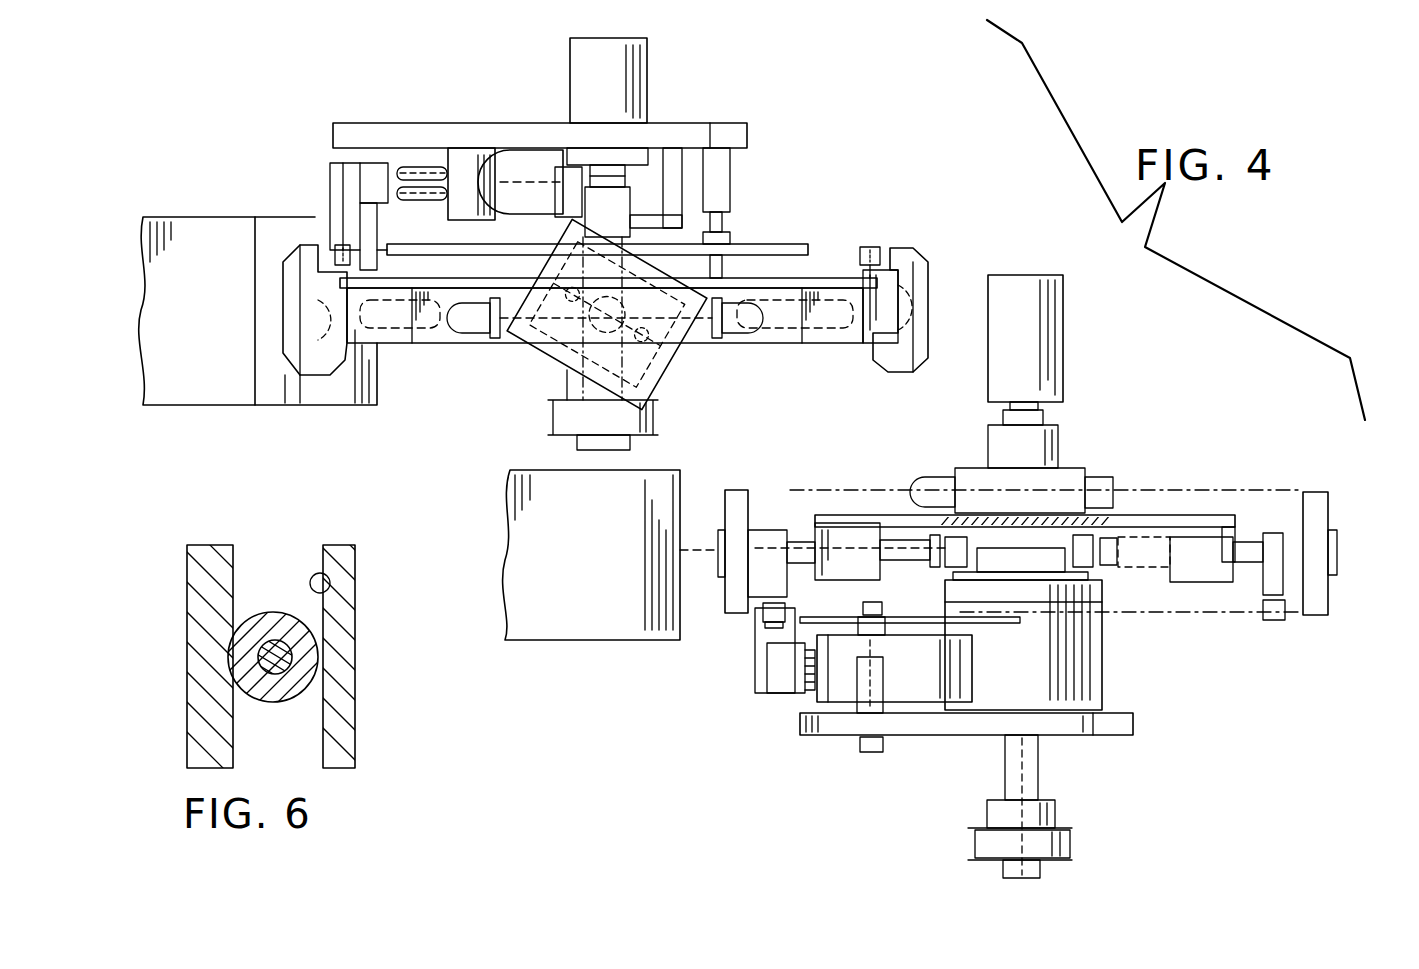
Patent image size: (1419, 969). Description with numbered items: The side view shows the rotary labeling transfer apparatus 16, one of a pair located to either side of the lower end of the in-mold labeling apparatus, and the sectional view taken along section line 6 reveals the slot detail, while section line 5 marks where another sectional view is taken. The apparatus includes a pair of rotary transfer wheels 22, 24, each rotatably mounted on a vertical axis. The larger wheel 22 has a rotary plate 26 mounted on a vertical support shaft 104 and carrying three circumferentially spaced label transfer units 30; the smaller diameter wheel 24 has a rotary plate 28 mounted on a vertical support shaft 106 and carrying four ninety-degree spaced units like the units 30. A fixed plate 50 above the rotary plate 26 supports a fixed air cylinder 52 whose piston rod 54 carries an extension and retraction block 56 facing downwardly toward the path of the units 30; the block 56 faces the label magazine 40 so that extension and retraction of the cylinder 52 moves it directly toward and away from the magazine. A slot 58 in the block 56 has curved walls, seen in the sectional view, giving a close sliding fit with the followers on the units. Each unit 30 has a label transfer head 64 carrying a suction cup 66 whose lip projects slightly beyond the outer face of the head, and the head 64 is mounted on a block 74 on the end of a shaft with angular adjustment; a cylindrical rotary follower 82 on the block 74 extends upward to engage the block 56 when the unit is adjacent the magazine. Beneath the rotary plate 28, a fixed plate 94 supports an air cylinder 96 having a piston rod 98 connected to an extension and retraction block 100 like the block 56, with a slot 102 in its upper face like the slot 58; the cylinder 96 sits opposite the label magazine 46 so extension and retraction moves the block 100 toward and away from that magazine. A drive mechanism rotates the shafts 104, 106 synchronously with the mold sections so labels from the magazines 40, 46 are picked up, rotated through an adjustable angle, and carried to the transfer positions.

In FIG. 4, the section line 5- 5 is at (530, 52).
In FIG. 4, the section line 6- 6 is at (318, 242).
In FIG. 4, the rotary labeling transfer apparatus 16 is at (885, 93).
In FIG. 4, the rotary transfer wheel 22 is at (790, 185).
In FIG. 4, the rotary transfer wheel 24 is at (1202, 652).
In FIG. 4, the rotary plate 26 is at (808, 278).
In FIG. 4, the rotary plate 28 is at (1150, 515).
In FIG. 4, the label transfer unit 30 is at (401, 360).
In FIG. 4, the label magazine 40 is at (171, 217).
In FIG. 4, the label magazine 46 is at (591, 593).
In FIG. 4, the fixed plate 50 is at (468, 123).
In FIG. 4, the air cylinder 52 is at (535, 165).
In FIG. 4, the piston rod 54 is at (420, 150).
In FIG. 4, the extension and retraction block 56 is at (330, 180).
In FIG. 6, the extension and retraction block 56 is at (358, 555).
In FIG. 6, the slot 58 is at (332, 592).
In FIG. 4, the label transfer head 64 is at (325, 363).
In FIG. 4, the suction cup 66 is at (718, 547).
In FIG. 4, the block 74 is at (1270, 533).
In FIG. 4, the rotary follower 82 is at (871, 247).
In FIG. 6, the rotary follower 82 is at (266, 612).
In FIG. 4, the fixed plate 94 is at (1133, 722).
In FIG. 4, the air cylinder 96 is at (908, 683).
In FIG. 4, the piston rod 98 is at (802, 680).
In FIG. 4, the extension and retraction block 100 is at (757, 693).
In FIG. 4, the slot 102 is at (770, 615).
In FIG. 4, the vertical support shaft 104 is at (632, 190).
In FIG. 4, the vertical support shaft 106 is at (1040, 768).